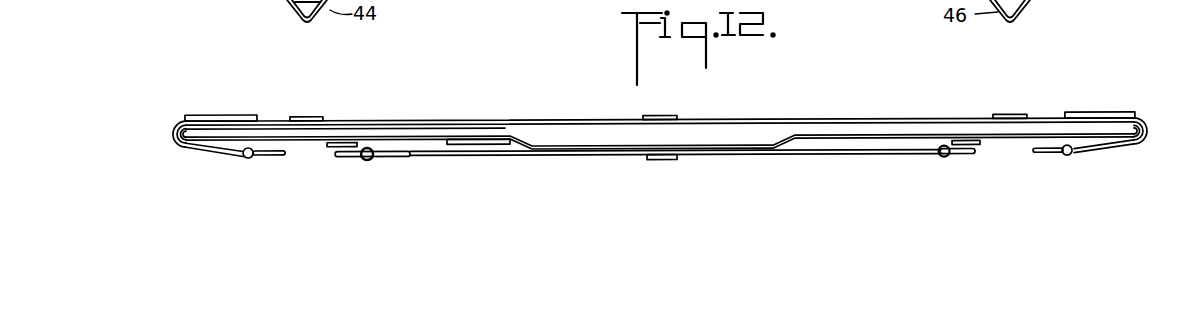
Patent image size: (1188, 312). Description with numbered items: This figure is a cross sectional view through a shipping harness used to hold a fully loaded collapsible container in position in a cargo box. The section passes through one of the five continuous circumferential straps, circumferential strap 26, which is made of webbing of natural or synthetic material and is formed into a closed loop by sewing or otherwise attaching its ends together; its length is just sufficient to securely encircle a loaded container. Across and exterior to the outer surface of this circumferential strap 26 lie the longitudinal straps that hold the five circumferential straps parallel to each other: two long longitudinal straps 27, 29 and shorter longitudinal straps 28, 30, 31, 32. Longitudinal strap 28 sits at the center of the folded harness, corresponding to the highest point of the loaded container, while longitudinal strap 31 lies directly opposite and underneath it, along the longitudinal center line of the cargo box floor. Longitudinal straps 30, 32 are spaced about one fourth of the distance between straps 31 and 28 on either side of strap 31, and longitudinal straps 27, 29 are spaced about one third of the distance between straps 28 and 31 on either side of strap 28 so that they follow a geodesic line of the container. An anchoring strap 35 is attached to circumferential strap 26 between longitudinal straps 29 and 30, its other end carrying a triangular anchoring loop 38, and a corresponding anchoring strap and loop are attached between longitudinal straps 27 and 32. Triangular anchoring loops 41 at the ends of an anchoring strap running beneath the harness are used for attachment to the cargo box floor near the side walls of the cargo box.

The circumferential strap 26 is at (575, 124).
The longitudinal strap 27 is at (312, 116).
The longitudinal strap 28 is at (674, 118).
The longitudinal strap 29 is at (1008, 115).
The longitudinal strap 30 is at (977, 147).
The longitudinal strap 31 is at (665, 161).
The longitudinal strap 32 is at (330, 148).
The anchoring strap 35 is at (1102, 113).
The triangular anchoring loop 38 is at (1045, 159).
The triangular anchoring loop 41 is at (967, 159).